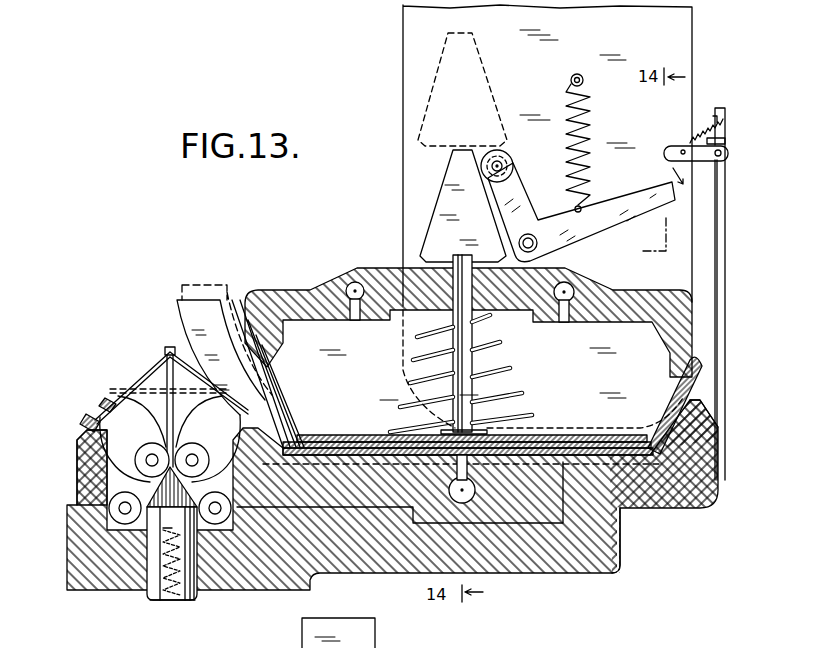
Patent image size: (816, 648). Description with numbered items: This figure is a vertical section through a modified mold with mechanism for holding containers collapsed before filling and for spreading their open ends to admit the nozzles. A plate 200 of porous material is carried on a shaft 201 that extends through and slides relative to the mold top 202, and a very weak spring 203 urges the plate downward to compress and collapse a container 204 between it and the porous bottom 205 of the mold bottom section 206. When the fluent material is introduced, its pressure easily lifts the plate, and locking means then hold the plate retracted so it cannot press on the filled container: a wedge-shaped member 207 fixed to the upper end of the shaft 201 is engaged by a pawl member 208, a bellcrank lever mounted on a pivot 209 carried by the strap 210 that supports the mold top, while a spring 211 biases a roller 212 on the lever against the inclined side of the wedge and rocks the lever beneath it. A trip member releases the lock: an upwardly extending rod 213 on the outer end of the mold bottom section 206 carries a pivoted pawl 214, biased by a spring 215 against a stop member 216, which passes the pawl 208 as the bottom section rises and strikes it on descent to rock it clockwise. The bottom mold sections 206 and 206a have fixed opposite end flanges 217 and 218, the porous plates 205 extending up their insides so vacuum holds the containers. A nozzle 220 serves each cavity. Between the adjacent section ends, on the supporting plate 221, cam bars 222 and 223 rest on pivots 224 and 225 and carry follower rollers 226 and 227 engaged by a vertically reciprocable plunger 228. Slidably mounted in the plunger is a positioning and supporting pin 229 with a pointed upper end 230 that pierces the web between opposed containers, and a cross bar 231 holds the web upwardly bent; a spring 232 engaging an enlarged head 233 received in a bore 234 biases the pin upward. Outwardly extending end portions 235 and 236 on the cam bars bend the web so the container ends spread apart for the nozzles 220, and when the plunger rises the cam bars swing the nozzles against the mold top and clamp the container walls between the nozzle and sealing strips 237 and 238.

The plate 200 is at (328, 434).
The shaft 201 is at (462, 365).
The mold top 202 is at (330, 285).
The spring 203 is at (410, 383).
The container 204 is at (677, 422).
The porous bottom 205 is at (645, 455).
The mold bottom section 206 is at (700, 495).
The mold bottom section 206a is at (78, 470).
The wedge-shaped member 207 is at (425, 100).
The pawl member 208 is at (516, 192).
The pivot 209 is at (532, 234).
The strap 210 is at (407, 150).
The spring 211 is at (567, 101).
The roller 212 is at (511, 160).
The rod 213 is at (718, 180).
The pawl 214 is at (673, 149).
The spring 215 is at (705, 125).
The stop member 216 is at (724, 141).
The end flange 217 is at (270, 428).
The end flange 218 is at (695, 415).
The nozzle 220 is at (203, 300).
The supporting plate 221 is at (545, 574).
The cam bar 222 is at (147, 425).
The cam bar 223 is at (200, 425).
The pivot 224 is at (125, 508).
The pivot 225 is at (217, 512).
The follower roller 226 is at (138, 478).
The follower roller 227 is at (206, 475).
The plunger 228 is at (157, 590).
The positioning and supporting pin 229 is at (150, 390).
The pointed upper end 230 is at (172, 340).
The cross bar 231 is at (167, 375).
The spring 232 is at (147, 590).
The enlarged head 233 is at (163, 533).
The bore 234 is at (163, 605).
The end portion 235 is at (93, 408).
The end portion 236 is at (268, 405).
The sealing strip 237 is at (107, 400).
The sealing strip 238 is at (263, 388).